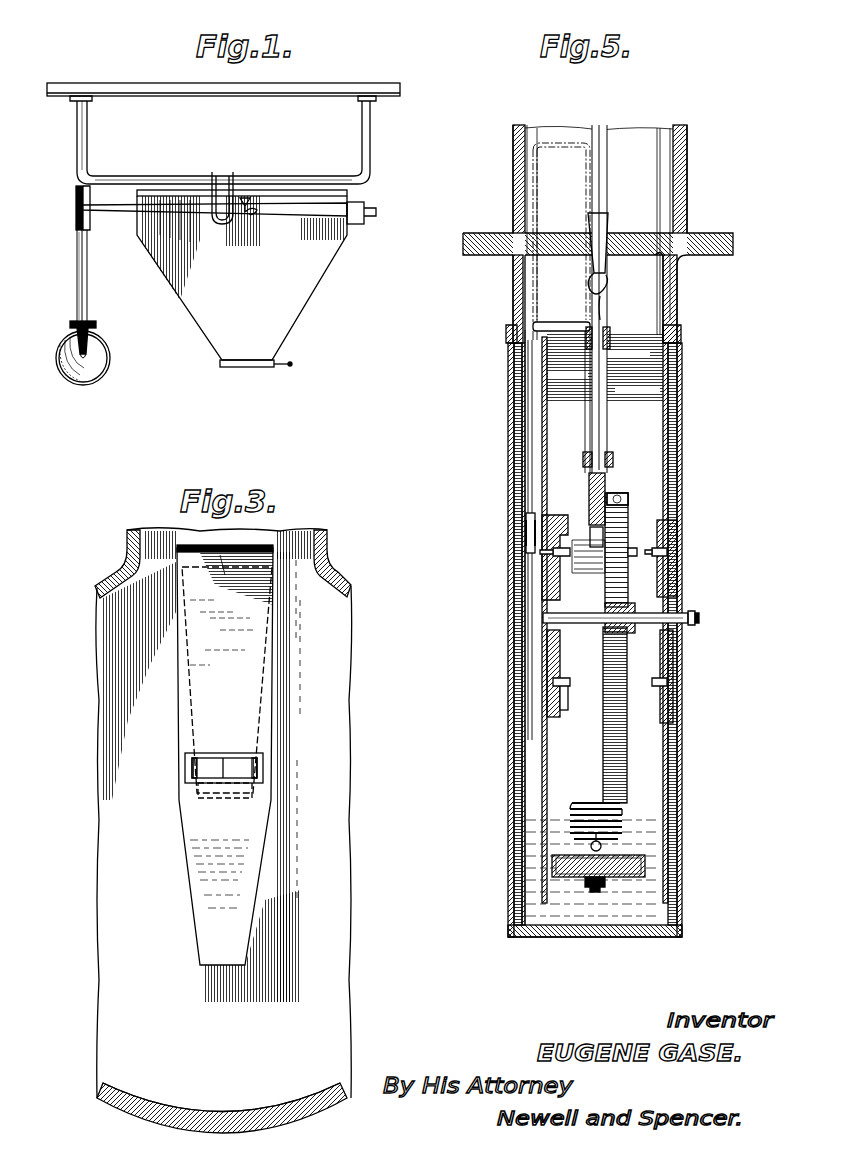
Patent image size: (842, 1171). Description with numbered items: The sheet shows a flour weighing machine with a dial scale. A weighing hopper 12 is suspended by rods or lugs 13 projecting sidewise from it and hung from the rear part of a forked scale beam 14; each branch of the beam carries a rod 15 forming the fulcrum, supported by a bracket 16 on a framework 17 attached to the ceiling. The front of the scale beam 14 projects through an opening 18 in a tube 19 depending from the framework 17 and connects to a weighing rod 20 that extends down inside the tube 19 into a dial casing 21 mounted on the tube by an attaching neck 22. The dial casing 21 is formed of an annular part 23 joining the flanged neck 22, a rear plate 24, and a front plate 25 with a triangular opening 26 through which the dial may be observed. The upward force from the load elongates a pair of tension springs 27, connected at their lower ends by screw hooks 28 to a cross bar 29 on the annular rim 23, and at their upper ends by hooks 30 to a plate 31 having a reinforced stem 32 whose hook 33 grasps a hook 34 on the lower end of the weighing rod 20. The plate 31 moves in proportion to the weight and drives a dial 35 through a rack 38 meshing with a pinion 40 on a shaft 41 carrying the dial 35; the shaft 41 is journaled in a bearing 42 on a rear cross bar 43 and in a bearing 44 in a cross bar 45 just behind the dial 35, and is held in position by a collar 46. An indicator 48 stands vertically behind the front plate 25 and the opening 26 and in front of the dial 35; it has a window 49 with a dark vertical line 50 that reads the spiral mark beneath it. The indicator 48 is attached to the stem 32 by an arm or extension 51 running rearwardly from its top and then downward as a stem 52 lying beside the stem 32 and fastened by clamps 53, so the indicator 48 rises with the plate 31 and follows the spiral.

In FIG. 1, the weighing hopper 12 is at (282, 313).
In FIG. 1, the rods or lugs 13 is at (271, 220).
In FIG. 1, the scale beam 14 is at (186, 216).
In FIG. 1, the rod 15 is at (243, 214).
In FIG. 1, the bracket 16 is at (234, 178).
In FIG. 1, the framework 17 is at (305, 180).
In FIG. 1, the opening 18 is at (88, 214).
In FIG. 1, the tube 19 is at (76, 250).
In FIG. 5, the tube 19 is at (690, 186).
In FIG. 1, the weighing rod 20 is at (90, 288).
In FIG. 5, the weighing rod 20 is at (608, 178).
In FIG. 1, the dial casing 21 is at (110, 352).
In FIG. 1, the attaching neck 22 is at (96, 326).
In FIG. 5, the attaching neck 22 is at (678, 300).
In FIG. 1, the annular part 23 is at (110, 372).
In FIG. 5, the annular part 23 is at (592, 938).
In FIG. 3, the annular part 23 is at (330, 549).
In FIG. 5, the rear plate 24 is at (647, 866).
In FIG. 1, the front plate 25 is at (95, 372).
In FIG. 5, the front plate 25 is at (507, 850).
In FIG. 3, the front plate 25 is at (115, 682).
In FIG. 1, the triangular opening 26 is at (80, 340).
In FIG. 5, the triangular opening 26 is at (510, 472).
In FIG. 3, the triangular opening 26 is at (266, 652).
In FIG. 5, the tension springs 27 is at (615, 822).
In FIG. 5, the screw hooks 28 is at (604, 848).
In FIG. 5, the cross bar 29 is at (606, 884).
In FIG. 5, the hooks 30 is at (588, 532).
In FIG. 5, the plate 31 is at (607, 486).
In FIG. 5, the reinforced stem 32 is at (605, 367).
In FIG. 5, the hook 33 is at (608, 276).
In FIG. 5, the hook 34 is at (604, 240).
In FIG. 5, the dial 35 is at (543, 405).
In FIG. 5, the rack 38 is at (628, 746).
In FIG. 5, the pinion 40 is at (632, 606).
In FIG. 5, the shaft 41 is at (584, 613).
In FIG. 5, the bearing 42 is at (682, 598).
In FIG. 5, the rear cross bar 43 is at (677, 548).
In FIG. 5, the bearing 44 is at (563, 672).
In FIG. 5, the cross bar 45 is at (565, 712).
In FIG. 5, the collar 46 is at (690, 626).
In FIG. 5, the indicator 48 is at (530, 578).
In FIG. 3, the indicator 48 is at (275, 708).
In FIG. 1, the window 49 is at (80, 354).
In FIG. 5, the window 49 is at (526, 530).
In FIG. 3, the window 49 is at (264, 768).
In FIG. 1, the dark vertical line 50 is at (80, 360).
In FIG. 3, the dark vertical line 50 is at (228, 770).
In FIG. 5, the arm or extension 51 is at (577, 325).
In FIG. 3, the arm or extension 51 is at (228, 556).
In FIG. 5, the stem 52 is at (547, 380).
In FIG. 5, the clamps 53 is at (608, 332).